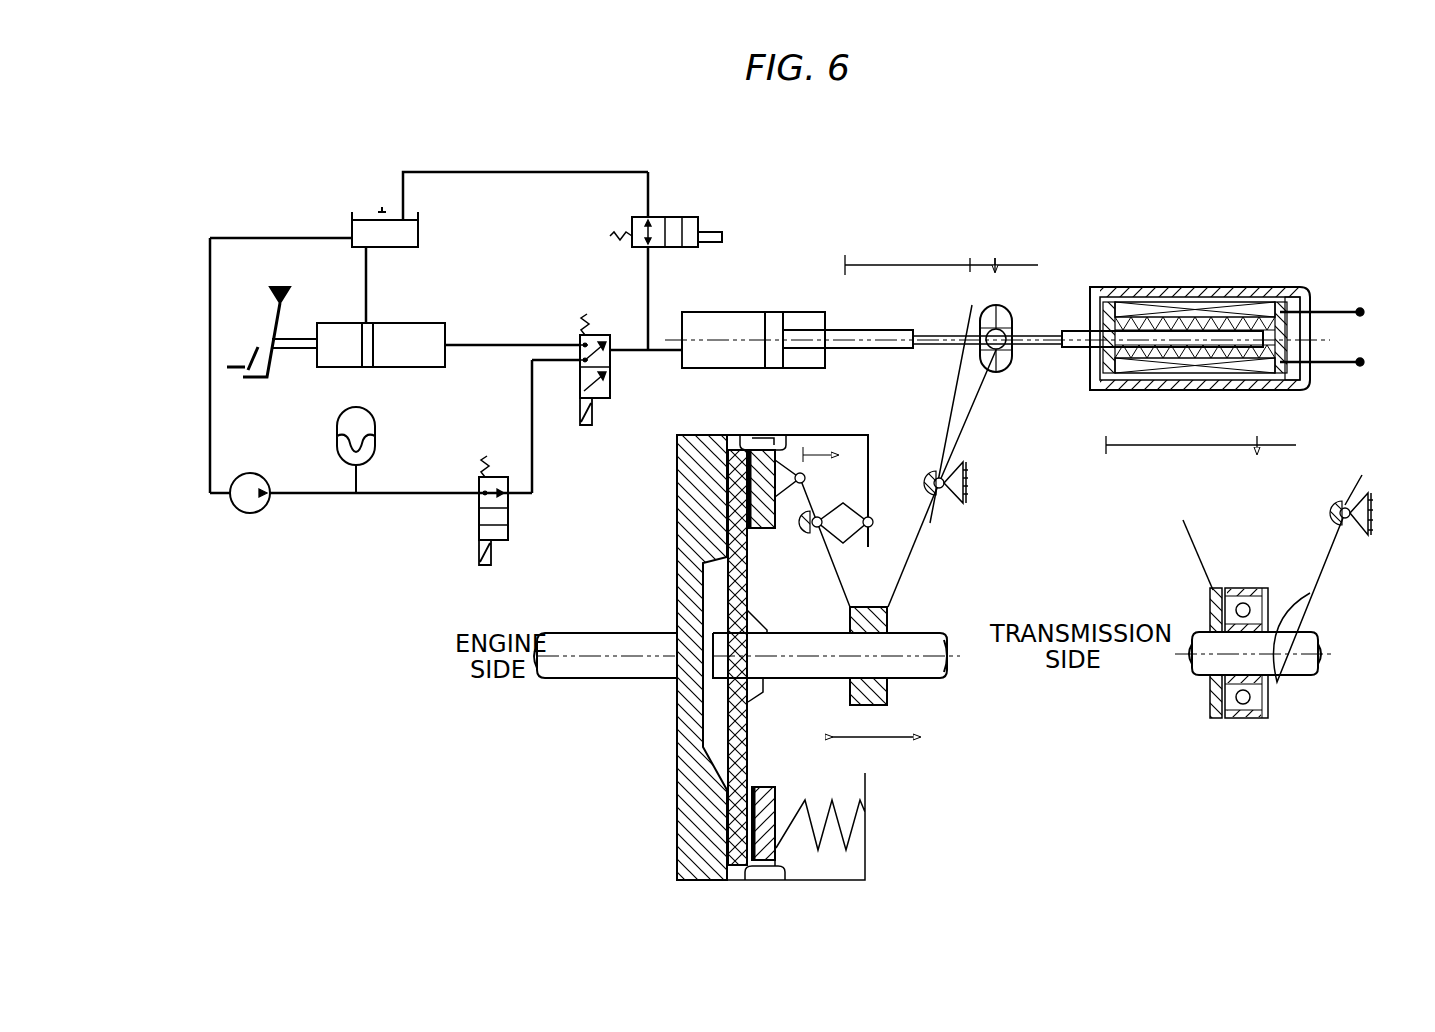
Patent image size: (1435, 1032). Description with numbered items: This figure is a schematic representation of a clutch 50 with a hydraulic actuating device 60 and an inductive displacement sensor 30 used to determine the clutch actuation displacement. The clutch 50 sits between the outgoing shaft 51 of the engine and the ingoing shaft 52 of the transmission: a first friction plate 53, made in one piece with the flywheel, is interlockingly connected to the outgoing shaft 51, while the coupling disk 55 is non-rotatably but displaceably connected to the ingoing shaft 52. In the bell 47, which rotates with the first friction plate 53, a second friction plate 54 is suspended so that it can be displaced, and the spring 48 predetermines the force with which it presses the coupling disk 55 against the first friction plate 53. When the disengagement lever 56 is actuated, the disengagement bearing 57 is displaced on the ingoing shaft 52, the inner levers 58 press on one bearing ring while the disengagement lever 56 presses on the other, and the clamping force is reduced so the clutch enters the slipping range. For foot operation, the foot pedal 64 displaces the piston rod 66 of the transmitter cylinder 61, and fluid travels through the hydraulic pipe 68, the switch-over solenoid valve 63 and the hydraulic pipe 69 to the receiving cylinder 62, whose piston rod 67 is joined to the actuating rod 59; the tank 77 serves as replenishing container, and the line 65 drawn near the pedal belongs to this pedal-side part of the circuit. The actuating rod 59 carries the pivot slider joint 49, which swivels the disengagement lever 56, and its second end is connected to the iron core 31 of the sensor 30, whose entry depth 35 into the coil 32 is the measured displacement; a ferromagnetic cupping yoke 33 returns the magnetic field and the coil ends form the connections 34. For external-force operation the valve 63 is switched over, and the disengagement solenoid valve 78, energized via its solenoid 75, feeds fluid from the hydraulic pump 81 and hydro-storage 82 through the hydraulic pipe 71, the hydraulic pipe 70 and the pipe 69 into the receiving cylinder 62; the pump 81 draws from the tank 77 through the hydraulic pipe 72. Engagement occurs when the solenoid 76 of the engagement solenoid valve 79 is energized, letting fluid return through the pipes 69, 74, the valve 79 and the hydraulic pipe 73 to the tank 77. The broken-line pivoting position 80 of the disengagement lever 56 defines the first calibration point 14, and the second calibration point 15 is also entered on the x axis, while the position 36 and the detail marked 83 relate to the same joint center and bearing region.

The first calibration point 14 is at (969, 270).
The second calibration point 15 is at (997, 270).
The inductive displacement sensor 30 is at (1182, 234).
The iron core 31 is at (1068, 348).
The coil 32 is at (1262, 368).
The cupping yoke 33 is at (1128, 287).
The connections 34 is at (1366, 361).
The entry depth (x) 35 is at (1330, 449).
The position X0 36 is at (1258, 506).
The bell 47 is at (805, 881).
The spring 48 is at (805, 805).
The pivot slider joint 49 is at (999, 372).
The clutch 50 is at (930, 803).
The outgoing shaft 51 is at (590, 664).
The ingoing shaft 52 is at (925, 681).
The first friction plate 53 is at (690, 818).
The second friction plate 54 is at (768, 790).
The coupling disk 55 is at (748, 738).
The disengagement lever 56 is at (923, 560).
The disengagement bearing 57 is at (868, 607).
The inner levers 58 is at (833, 572).
The actuating rod 59 is at (941, 346).
The hydraulic actuating device 60 is at (800, 194).
The transmitter cylinder 61 is at (396, 323).
The receiving cylinder 62 is at (706, 330).
The hydraulic switch-over solenoid valve 63 is at (611, 412).
The foot pedal 64 is at (268, 380).
The line 65 is at (246, 368).
The piston rod 66 is at (331, 342).
The piston rod 67 is at (846, 341).
The hydraulic pipe 68 is at (466, 345).
The hydraulic pipe 69 is at (665, 352).
The hydraulic pipe 70 is at (534, 478).
The hydraulic pipe 71 is at (316, 494).
The hydraulic pipe 72 is at (210, 286).
The hydraulic pipe 73 is at (500, 172).
The hydraulic pipe 74 is at (648, 287).
The solenoid 75 is at (480, 566).
The solenoid 76 is at (714, 232).
The tank 77 is at (359, 212).
The disengagement solenoid valve 78 is at (508, 545).
The engagement solenoid valve 79 is at (665, 217).
The pivoting position 80 is at (948, 432).
The hydraulic pump 81 is at (248, 514).
The hydro-storage 82 is at (378, 442).
The detail view 83 is at (1300, 752).